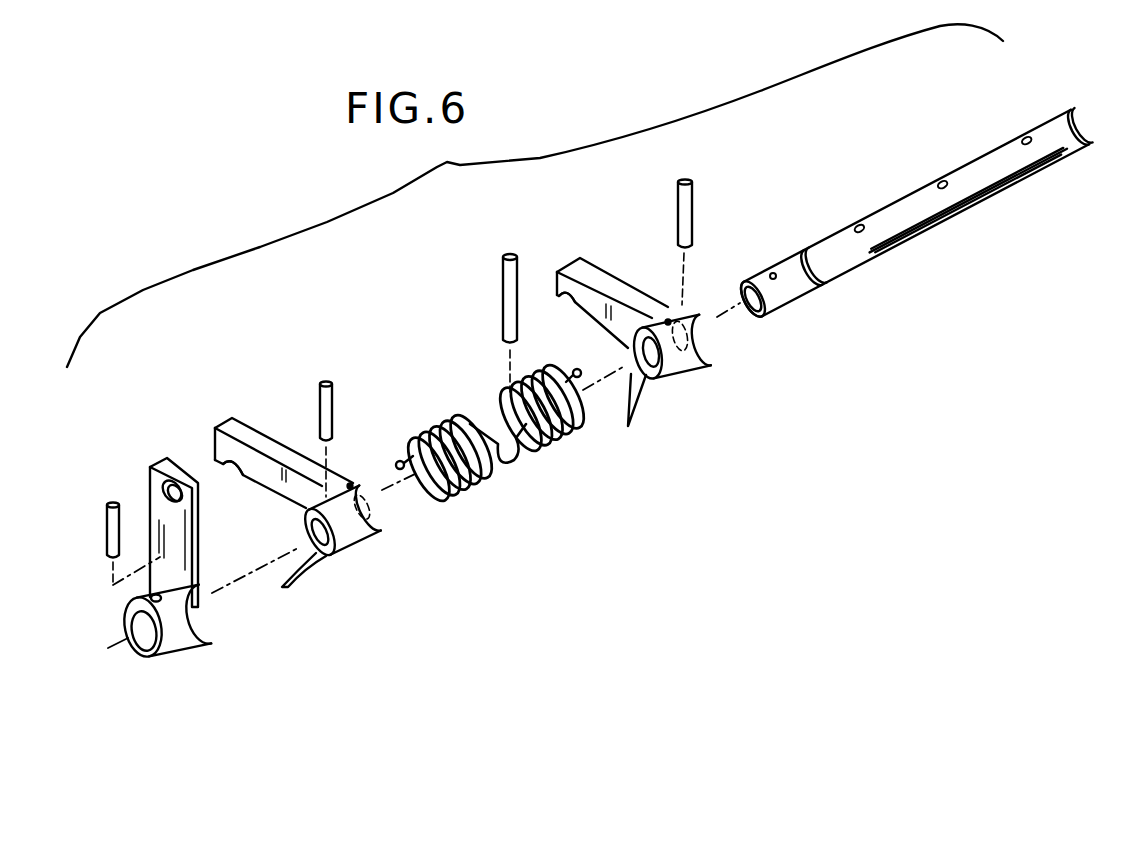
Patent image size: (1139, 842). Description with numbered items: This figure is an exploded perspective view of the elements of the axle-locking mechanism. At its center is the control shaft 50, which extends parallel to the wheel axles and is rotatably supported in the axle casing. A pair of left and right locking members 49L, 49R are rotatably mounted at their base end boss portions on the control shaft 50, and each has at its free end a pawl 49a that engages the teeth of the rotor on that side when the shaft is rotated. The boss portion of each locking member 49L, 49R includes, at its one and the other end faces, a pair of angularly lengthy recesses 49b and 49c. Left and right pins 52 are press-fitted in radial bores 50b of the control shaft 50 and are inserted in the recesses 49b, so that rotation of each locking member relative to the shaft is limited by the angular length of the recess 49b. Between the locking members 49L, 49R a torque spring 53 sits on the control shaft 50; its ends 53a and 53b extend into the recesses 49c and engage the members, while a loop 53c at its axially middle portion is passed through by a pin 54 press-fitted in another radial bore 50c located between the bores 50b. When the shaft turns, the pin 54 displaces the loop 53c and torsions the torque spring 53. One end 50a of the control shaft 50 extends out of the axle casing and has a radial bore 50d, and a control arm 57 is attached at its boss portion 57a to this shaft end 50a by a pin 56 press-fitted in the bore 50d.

The left locking member 49L is at (270, 436).
The right locking member 49R is at (627, 276).
The pawl 49a is at (220, 468).
The recess 49b is at (310, 550).
The recess 49c is at (362, 488).
The control shaft 50 is at (953, 223).
The end of control shaft 50a is at (771, 316).
The radial bore 50b is at (858, 224).
The radial bore 50c is at (941, 181).
The radial bore 50d is at (777, 280).
The pin 52 is at (333, 390).
The torque spring 53 is at (469, 499).
The end of torque spring 53a is at (399, 460).
The end of torque spring 53b is at (579, 378).
The loop 53c is at (513, 468).
The pin 54 is at (508, 290).
The pin 56 is at (113, 500).
The control arm 57 is at (167, 458).
The boss portion 57a is at (183, 632).